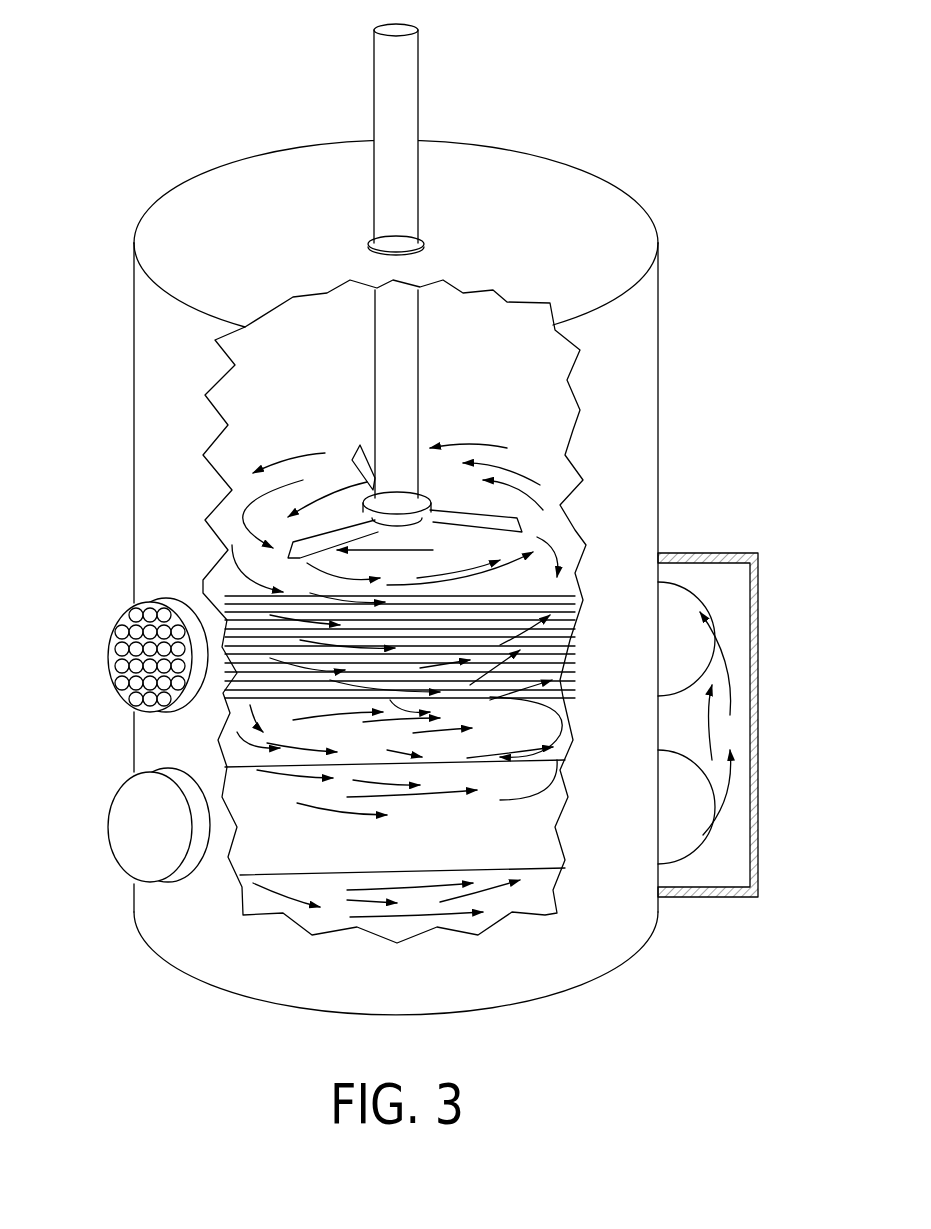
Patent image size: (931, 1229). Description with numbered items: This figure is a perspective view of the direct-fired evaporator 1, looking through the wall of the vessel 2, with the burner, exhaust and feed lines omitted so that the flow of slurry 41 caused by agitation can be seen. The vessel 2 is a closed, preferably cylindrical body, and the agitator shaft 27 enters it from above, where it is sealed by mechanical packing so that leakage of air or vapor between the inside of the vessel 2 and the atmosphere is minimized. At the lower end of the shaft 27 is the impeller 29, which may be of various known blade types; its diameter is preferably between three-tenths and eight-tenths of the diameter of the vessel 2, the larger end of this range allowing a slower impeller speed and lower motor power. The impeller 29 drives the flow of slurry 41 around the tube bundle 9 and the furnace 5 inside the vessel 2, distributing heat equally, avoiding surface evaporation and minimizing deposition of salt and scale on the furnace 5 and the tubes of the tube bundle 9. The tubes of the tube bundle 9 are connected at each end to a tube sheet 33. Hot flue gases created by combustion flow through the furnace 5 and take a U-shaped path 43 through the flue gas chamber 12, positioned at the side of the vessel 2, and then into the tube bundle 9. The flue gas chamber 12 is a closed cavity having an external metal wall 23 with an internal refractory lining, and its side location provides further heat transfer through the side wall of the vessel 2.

The direct-fired evaporator 1 is at (166, 92).
The vessel 2 is at (630, 378).
The furnace 5 is at (538, 875).
The tube bundle 9 is at (565, 598).
The flue gas chamber 12 is at (682, 848).
The external metal wall 23 is at (755, 705).
The shaft 27 is at (408, 76).
The impeller 29 is at (545, 521).
The tube sheet 33 is at (114, 622).
The flow of slurry 41 is at (295, 455).
The U-shaped path 43 is at (722, 650).